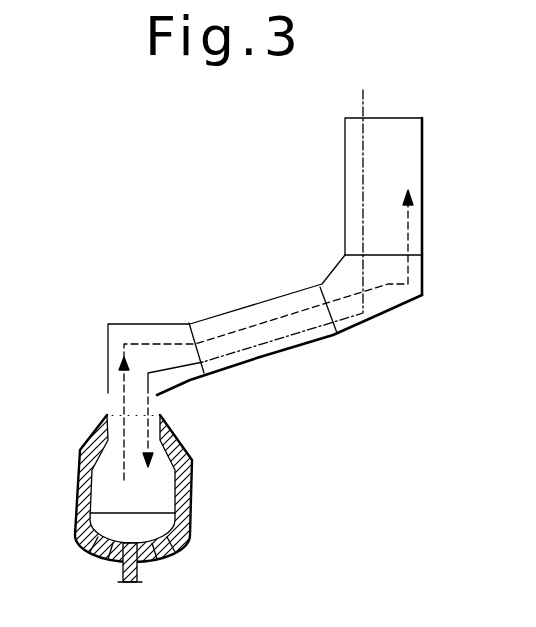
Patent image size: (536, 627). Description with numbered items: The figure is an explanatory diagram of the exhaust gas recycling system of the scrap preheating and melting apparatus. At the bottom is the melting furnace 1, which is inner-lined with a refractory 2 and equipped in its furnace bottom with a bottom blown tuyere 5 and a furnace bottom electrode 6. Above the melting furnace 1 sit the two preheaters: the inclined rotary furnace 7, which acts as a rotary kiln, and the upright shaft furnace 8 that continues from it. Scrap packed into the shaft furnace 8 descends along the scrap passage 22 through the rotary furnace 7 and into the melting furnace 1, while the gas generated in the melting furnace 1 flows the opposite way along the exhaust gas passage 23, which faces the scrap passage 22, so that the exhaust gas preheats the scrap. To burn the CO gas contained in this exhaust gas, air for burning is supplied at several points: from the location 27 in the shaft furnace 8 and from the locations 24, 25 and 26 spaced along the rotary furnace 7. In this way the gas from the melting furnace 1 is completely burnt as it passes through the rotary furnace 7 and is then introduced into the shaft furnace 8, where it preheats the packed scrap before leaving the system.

The melting furnace 1 is at (150, 508).
The refractory 2 is at (190, 488).
The bottom blown tuyere 5 is at (95, 557).
The furnace bottom electrode 6 is at (140, 573).
The rotary furnace 7 is at (313, 343).
The shaft furnace 8 is at (425, 160).
The scrap passage 22 is at (365, 100).
The exhaust gas passage 23 is at (388, 287).
The air supply point in rotary kiln 24 is at (197, 312).
The air supply point in rotary kiln 25 is at (252, 296).
The air supply point in rotary kiln 26 is at (328, 277).
The air supply point in shaft furnace 27 is at (335, 155).